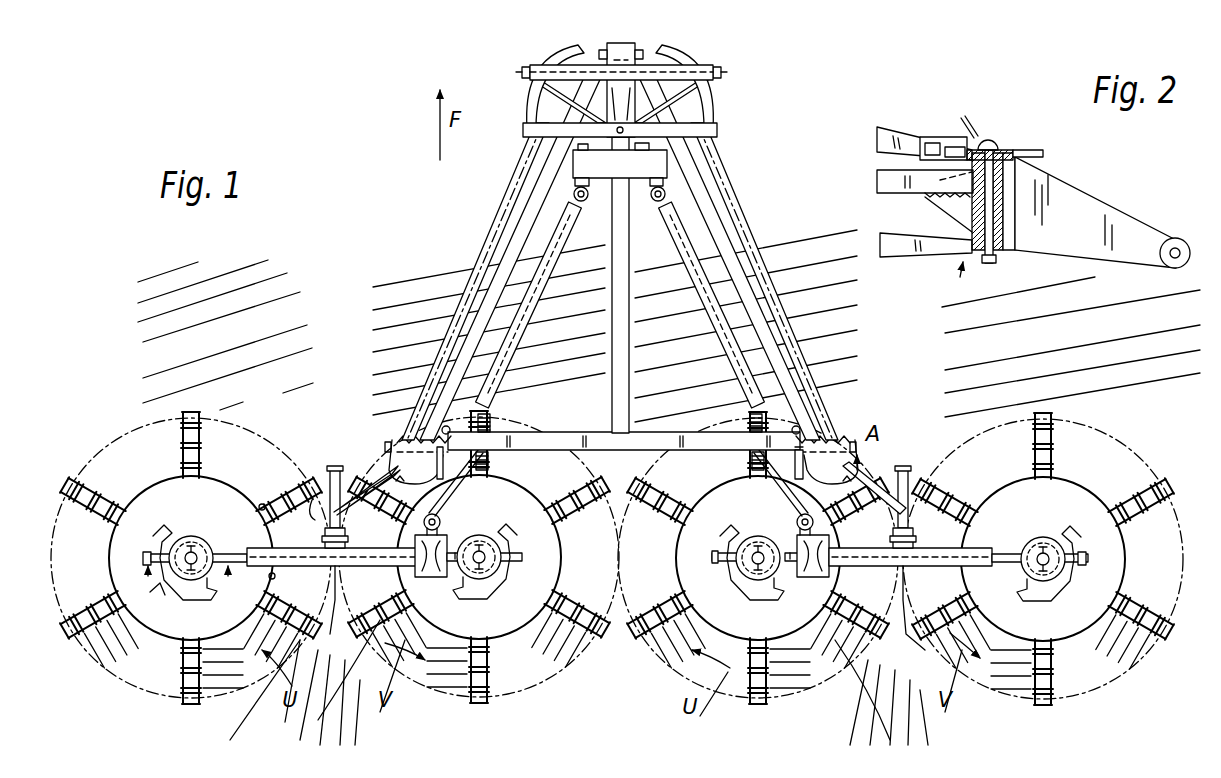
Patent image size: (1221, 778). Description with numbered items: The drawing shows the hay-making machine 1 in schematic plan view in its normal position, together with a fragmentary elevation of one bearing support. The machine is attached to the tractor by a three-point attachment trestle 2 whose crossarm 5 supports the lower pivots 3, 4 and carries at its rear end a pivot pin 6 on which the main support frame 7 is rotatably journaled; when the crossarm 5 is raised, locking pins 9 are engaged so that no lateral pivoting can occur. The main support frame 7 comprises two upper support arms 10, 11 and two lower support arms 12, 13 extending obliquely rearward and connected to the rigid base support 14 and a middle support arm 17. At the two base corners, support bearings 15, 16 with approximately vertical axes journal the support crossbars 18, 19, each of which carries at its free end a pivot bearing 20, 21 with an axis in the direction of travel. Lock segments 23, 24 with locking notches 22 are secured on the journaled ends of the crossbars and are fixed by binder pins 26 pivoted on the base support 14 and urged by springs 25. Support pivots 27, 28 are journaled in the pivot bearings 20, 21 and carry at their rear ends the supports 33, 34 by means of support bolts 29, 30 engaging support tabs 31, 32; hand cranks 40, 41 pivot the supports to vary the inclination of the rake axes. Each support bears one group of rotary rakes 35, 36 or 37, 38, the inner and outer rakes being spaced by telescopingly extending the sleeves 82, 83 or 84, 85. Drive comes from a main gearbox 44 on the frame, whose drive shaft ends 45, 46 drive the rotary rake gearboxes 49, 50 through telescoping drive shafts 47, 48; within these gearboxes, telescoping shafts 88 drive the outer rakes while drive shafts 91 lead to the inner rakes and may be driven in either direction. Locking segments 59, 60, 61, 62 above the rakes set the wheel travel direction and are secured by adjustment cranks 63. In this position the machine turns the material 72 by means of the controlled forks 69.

In FIG. 1, the hay-making machine 1 is at (430, 226).
In FIG. 1, the three-point attachment trestle 2 is at (644, 55).
In FIG. 1, the lower pivot 3 is at (712, 568).
In FIG. 1, the lower pivot 4 is at (148, 578).
In FIG. 1, the crossarm 5 is at (660, 66).
In FIG. 1, the pivot pin 6 is at (619, 127).
In FIG. 1, the main support frame 7 is at (715, 153).
In FIG. 1, the locking pin 9 is at (546, 60).
In FIG. 1, the upper support arm 10 is at (522, 228).
In FIG. 1, the upper support arm 11 is at (700, 203).
In FIG. 2, the upper support arm 11 is at (898, 136).
In FIG. 1, the lower support arm 12 is at (482, 268).
In FIG. 1, the lower support arm 13 is at (735, 226).
In FIG. 2, the lower support arm 13 is at (900, 252).
In FIG. 1, the base support 14 is at (601, 432).
In FIG. 2, the base support 14 is at (895, 186).
In FIG. 1, the support bearing 15 is at (436, 450).
In FIG. 1, the support bearing 16 is at (835, 452).
In FIG. 2, the support bearing 16 is at (978, 225).
In FIG. 1, the middle support arm 17 is at (630, 357).
In FIG. 1, the support crossbar 18 is at (368, 478).
In FIG. 1, the support crossbar 19 is at (880, 490).
In FIG. 2, the support crossbar 19 is at (1095, 212).
In FIG. 1, the pivot bearing 20 is at (330, 492).
In FIG. 1, the pivot bearing 21 is at (908, 482).
In FIG. 2, the pivot bearing 21 is at (1176, 238).
In FIG. 1, the locking notch 22 is at (481, 420).
In FIG. 2, the locking notch 22 is at (978, 140).
In FIG. 1, the lock segment 23 is at (430, 432).
In FIG. 1, the lock segment 24 is at (806, 444).
In FIG. 2, the lock segment 24 is at (1045, 155).
In FIG. 1, the spring 25 is at (443, 430).
In FIG. 1, the binder pin 26 is at (490, 462).
In FIG. 2, the binder pin 26 is at (964, 136).
In FIG. 1, the support pivot 27 is at (331, 468).
In FIG. 1, the support pivot 28 is at (862, 462).
In FIG. 1, the support bolt 29 is at (282, 655).
In FIG. 1, the support bolt 30 is at (966, 639).
In FIG. 1, the support tab 31 is at (326, 537).
In FIG. 1, the support tab 32 is at (892, 540).
In FIG. 1, the support 33 is at (396, 645).
In FIG. 1, the support 34 is at (870, 656).
In FIG. 1, the rotary rake 35 is at (181, 563).
In FIG. 1, the rotary rake 36 is at (536, 676).
In FIG. 1, the rotary rake 37 is at (838, 664).
In FIG. 1, the rotary rake 38 is at (1118, 670).
In FIG. 1, the hand crank 40 is at (330, 640).
In FIG. 1, the hand crank 41 is at (909, 638).
In FIG. 1, the main gearbox 44 is at (580, 170).
In FIG. 1, the drive shaft end 45 is at (587, 200).
In FIG. 1, the drive shaft end 46 is at (653, 200).
In FIG. 1, the drive shaft 47 is at (545, 290).
In FIG. 1, the drive shaft 48 is at (697, 291).
In FIG. 1, the rotary rake gearbox 49 is at (441, 520).
In FIG. 1, the rotary rake gearbox 50 is at (800, 530).
In FIG. 1, the locking segment 59 is at (188, 600).
In FIG. 1, the locking segment 60 is at (505, 582).
In FIG. 1, the locking segment 61 is at (750, 580).
In FIG. 1, the locking segment 62 is at (1060, 582).
In FIG. 1, the adjustment crank 63 is at (195, 578).
In FIG. 1, the fork 69 is at (79, 635).
In FIG. 1, the material 72 is at (296, 322).
In FIG. 1, the sleeve 82 is at (222, 552).
In FIG. 1, the sleeve 83 is at (260, 548).
In FIG. 1, the sleeve 84 is at (975, 548).
In FIG. 1, the sleeve 85 is at (1010, 552).
In FIG. 1, the telescoping shaft 88 is at (432, 578).
In FIG. 1, the drive shaft 91 is at (458, 566).